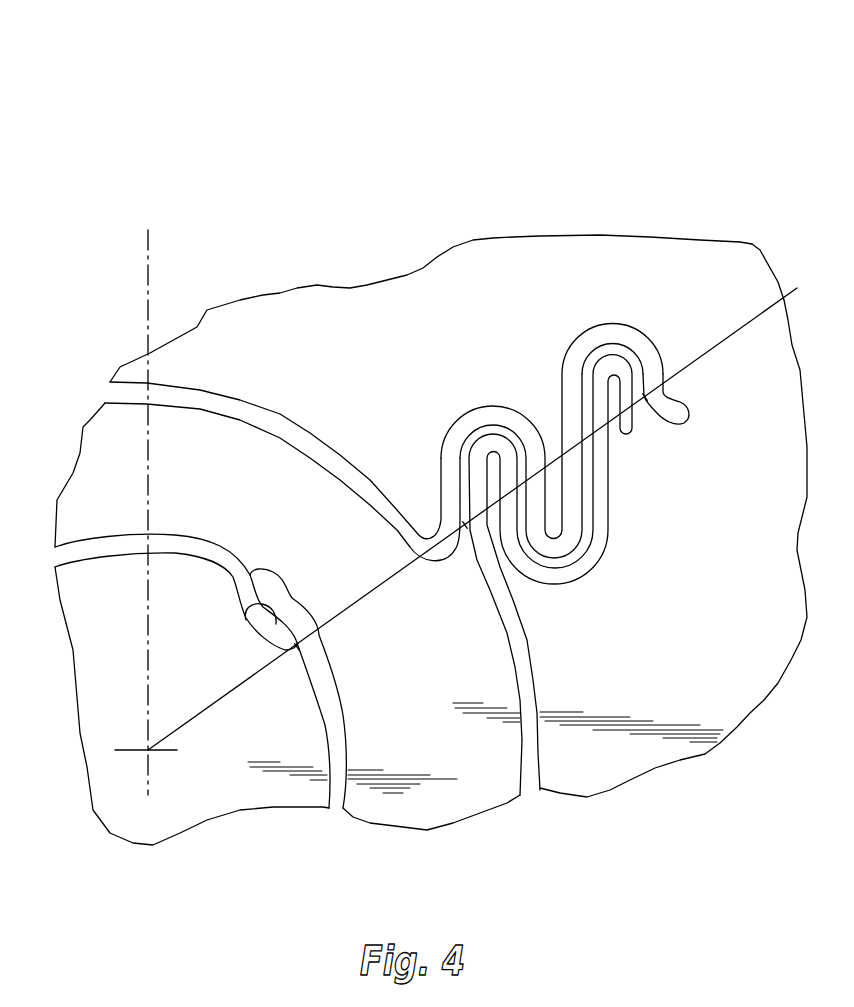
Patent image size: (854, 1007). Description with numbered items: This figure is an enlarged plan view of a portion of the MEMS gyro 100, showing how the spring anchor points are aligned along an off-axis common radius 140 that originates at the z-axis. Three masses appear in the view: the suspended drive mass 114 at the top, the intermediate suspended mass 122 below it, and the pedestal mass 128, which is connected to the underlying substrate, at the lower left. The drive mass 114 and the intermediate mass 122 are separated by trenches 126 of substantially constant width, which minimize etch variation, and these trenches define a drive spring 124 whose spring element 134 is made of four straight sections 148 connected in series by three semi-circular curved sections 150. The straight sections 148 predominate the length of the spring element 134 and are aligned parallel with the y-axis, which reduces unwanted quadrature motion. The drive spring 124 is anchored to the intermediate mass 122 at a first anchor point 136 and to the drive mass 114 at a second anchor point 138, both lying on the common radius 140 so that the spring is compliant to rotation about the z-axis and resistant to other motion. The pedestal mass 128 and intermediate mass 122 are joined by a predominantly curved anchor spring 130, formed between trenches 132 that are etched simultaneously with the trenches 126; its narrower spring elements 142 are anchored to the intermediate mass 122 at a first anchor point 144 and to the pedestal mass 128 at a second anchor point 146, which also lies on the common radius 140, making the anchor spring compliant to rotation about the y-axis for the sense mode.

The MEMS gyro 100 is at (606, 128).
The suspended drive mass 114 is at (383, 334).
The intermediate suspended mass 122 is at (419, 671).
The drive spring 124 is at (703, 533).
The trenches 126 is at (248, 418).
The pedestal mass 128 is at (207, 808).
The anchor spring 130 is at (322, 596).
The trenches 132 is at (175, 545).
The spring element 134 is at (458, 440).
The first anchor point 136 is at (461, 550).
The second anchor point 138 is at (643, 416).
The common radius 140 is at (730, 340).
The spring elements 142 is at (248, 617).
The first anchor point 144 is at (258, 570).
The second anchor point 146 is at (293, 658).
The straight sections 148 is at (532, 430).
The semi-circular curved sections 150 is at (493, 433).